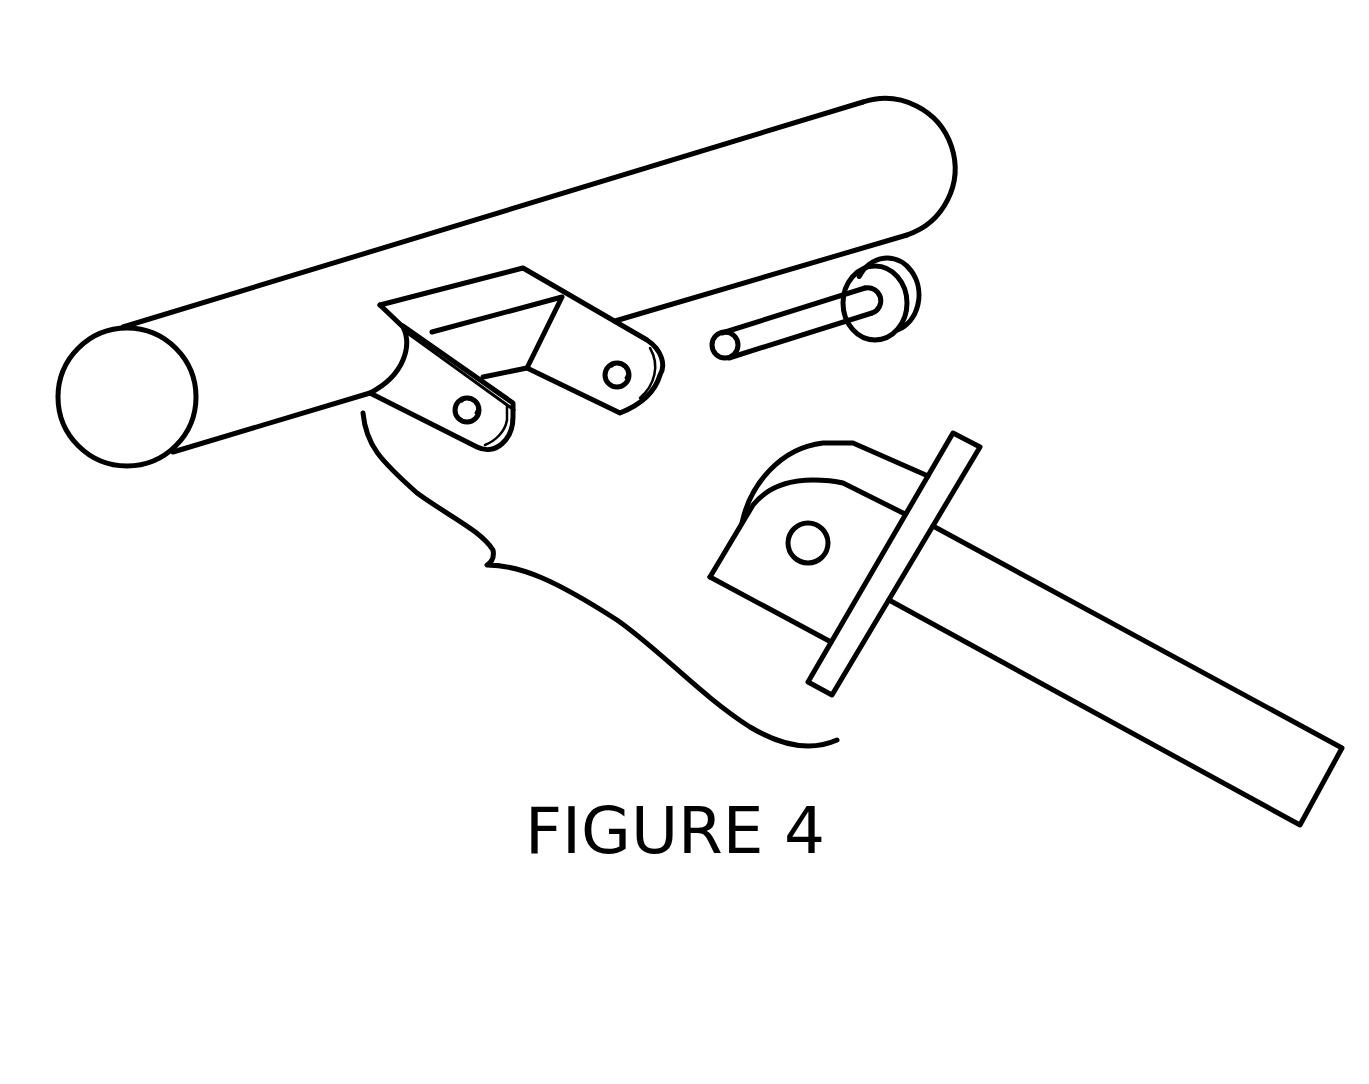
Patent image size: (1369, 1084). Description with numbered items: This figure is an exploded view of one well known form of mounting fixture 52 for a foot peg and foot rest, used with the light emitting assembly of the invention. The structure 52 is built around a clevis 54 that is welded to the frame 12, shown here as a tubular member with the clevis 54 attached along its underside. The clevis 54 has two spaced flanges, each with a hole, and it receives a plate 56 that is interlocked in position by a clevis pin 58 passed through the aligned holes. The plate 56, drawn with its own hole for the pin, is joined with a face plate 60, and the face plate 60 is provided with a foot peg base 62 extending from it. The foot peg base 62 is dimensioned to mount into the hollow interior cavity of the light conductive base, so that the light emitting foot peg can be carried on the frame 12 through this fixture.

The frame 12 is at (557, 182).
The mounting fixture 52 is at (600, 579).
The clevis 54 is at (444, 444).
The plate 56 is at (843, 475).
The clevis pin 58 is at (823, 343).
The face plate 60 is at (966, 493).
The foot peg base 62 is at (1170, 652).